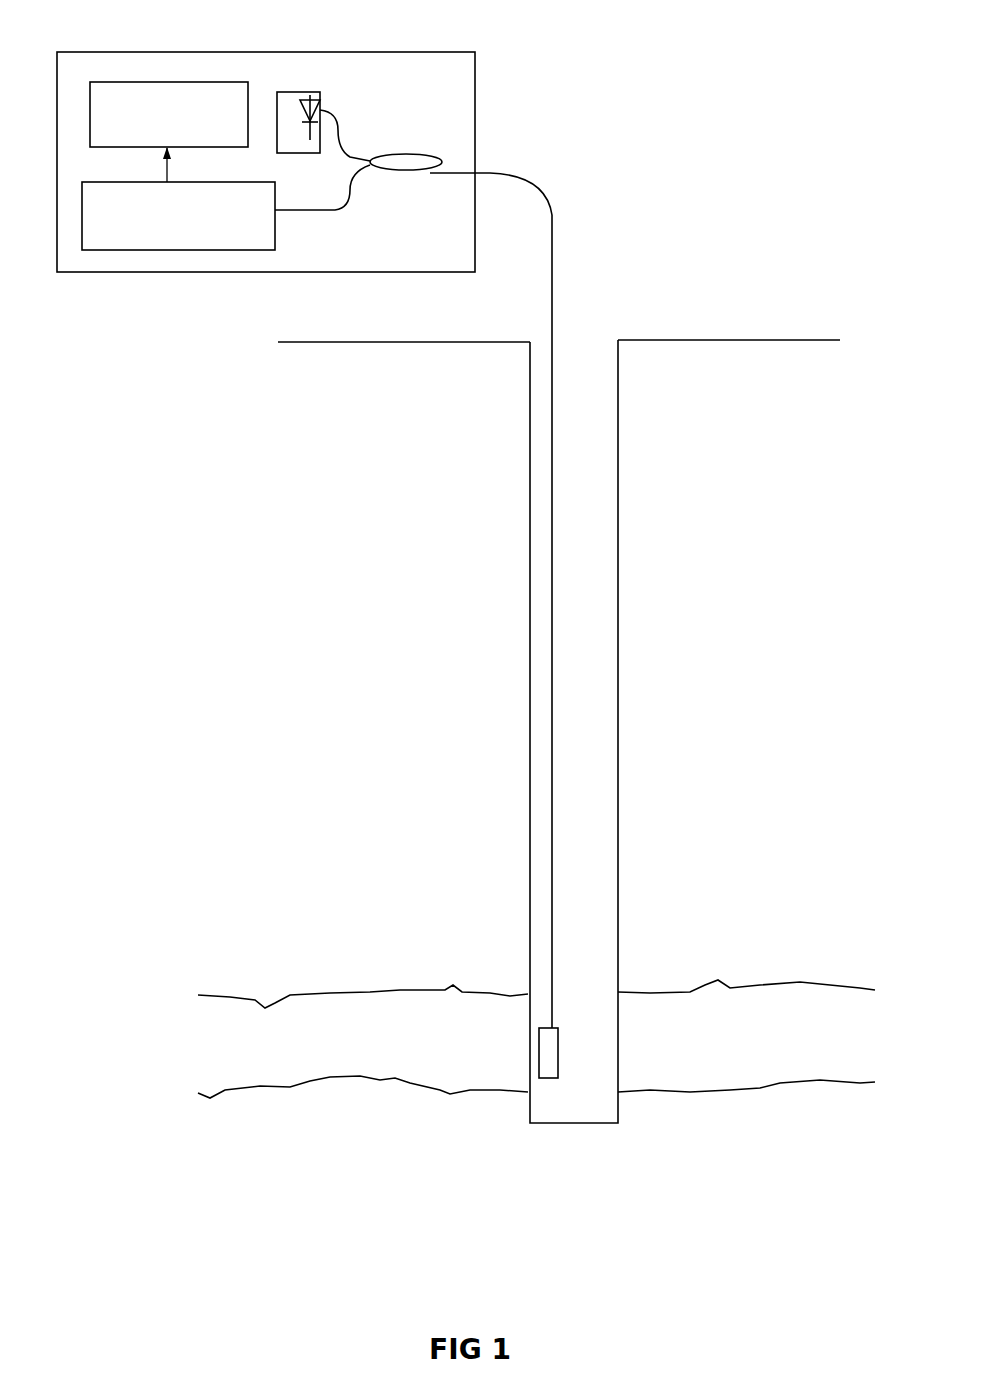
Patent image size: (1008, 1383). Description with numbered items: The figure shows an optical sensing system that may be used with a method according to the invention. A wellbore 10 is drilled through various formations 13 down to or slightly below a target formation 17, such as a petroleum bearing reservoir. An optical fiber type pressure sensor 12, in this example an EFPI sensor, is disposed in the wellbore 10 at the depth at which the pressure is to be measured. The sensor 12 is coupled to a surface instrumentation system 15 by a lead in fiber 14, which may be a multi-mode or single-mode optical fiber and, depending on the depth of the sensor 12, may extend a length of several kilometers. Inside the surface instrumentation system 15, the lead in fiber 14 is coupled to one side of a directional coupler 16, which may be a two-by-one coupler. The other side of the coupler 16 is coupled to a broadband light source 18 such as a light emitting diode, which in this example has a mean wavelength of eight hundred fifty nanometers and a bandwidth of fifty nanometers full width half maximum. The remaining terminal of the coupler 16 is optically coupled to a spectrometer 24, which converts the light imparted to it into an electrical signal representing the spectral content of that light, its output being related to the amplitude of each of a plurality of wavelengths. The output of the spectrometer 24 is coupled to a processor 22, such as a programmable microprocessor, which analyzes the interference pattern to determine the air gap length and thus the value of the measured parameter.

The wellbore 10 is at (603, 703).
The optical fiber type pressure sensor 12 is at (548, 1072).
The formations 13 is at (679, 852).
The lead in fiber 14 is at (550, 745).
The surface instrumentation system 15 is at (463, 129).
The directional coupler 16 is at (388, 173).
The target formation 17 is at (339, 1050).
The broadband light source 18 is at (310, 97).
The processor 22 is at (130, 100).
The spectrometer 24 is at (152, 250).